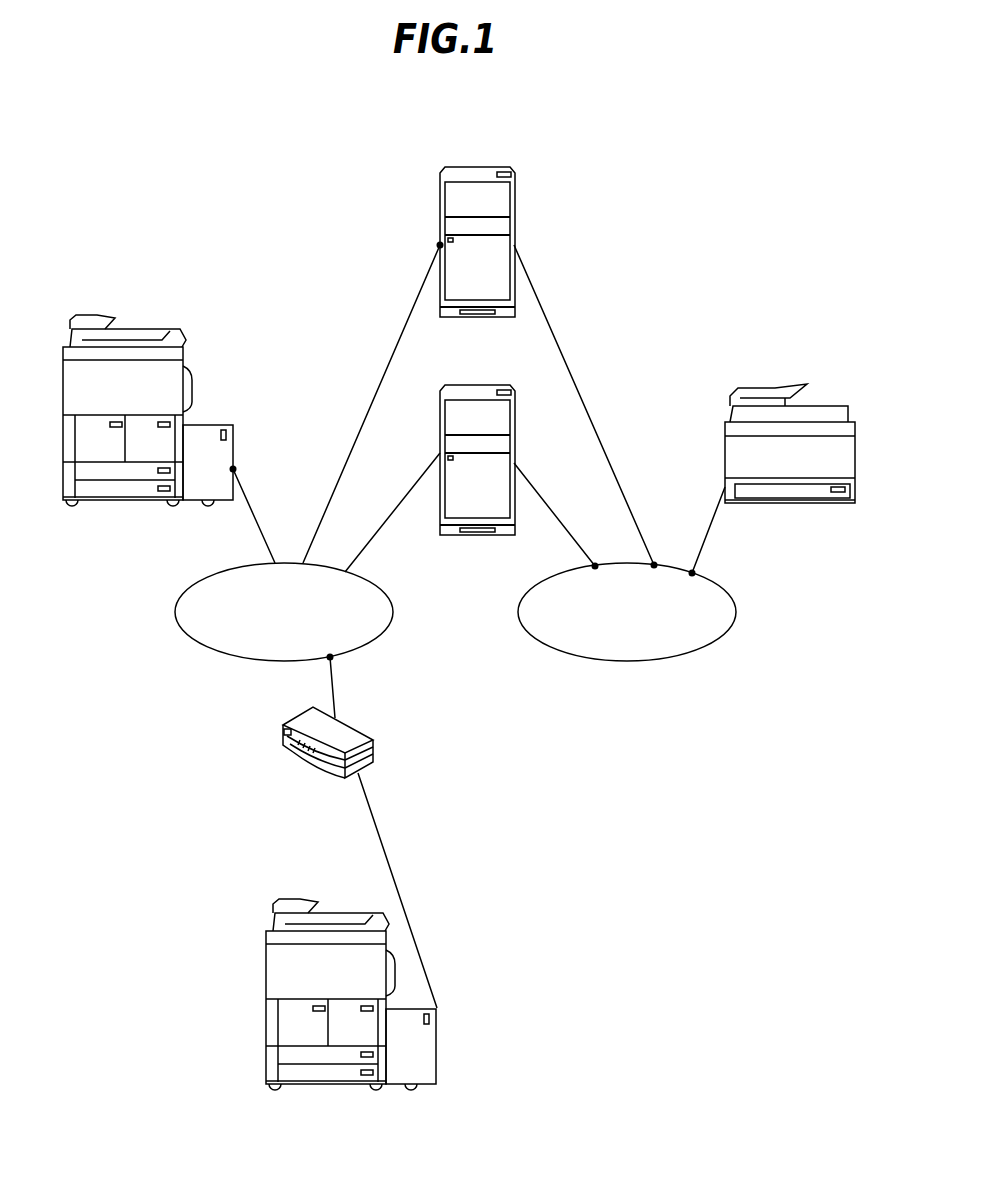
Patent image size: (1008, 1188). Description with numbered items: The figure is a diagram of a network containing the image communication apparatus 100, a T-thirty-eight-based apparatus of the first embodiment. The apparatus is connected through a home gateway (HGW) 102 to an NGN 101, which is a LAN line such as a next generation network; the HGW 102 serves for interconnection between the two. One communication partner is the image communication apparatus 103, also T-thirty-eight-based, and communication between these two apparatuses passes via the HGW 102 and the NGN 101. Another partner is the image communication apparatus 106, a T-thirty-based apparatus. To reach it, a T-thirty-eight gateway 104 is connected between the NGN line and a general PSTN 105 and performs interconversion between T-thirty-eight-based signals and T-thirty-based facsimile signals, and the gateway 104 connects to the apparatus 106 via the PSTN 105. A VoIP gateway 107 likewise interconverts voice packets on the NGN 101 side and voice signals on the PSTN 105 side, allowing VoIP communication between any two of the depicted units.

The image communication apparatus 100 is at (350, 912).
The NGN 101 is at (203, 647).
The home gateway 102 is at (373, 749).
The image communication apparatus 103 is at (95, 317).
The T.38 gateway 104 is at (515, 414).
The PSTN 105 is at (635, 662).
The image communication apparatus 106 is at (760, 386).
The VoIP gateway 107 is at (515, 197).